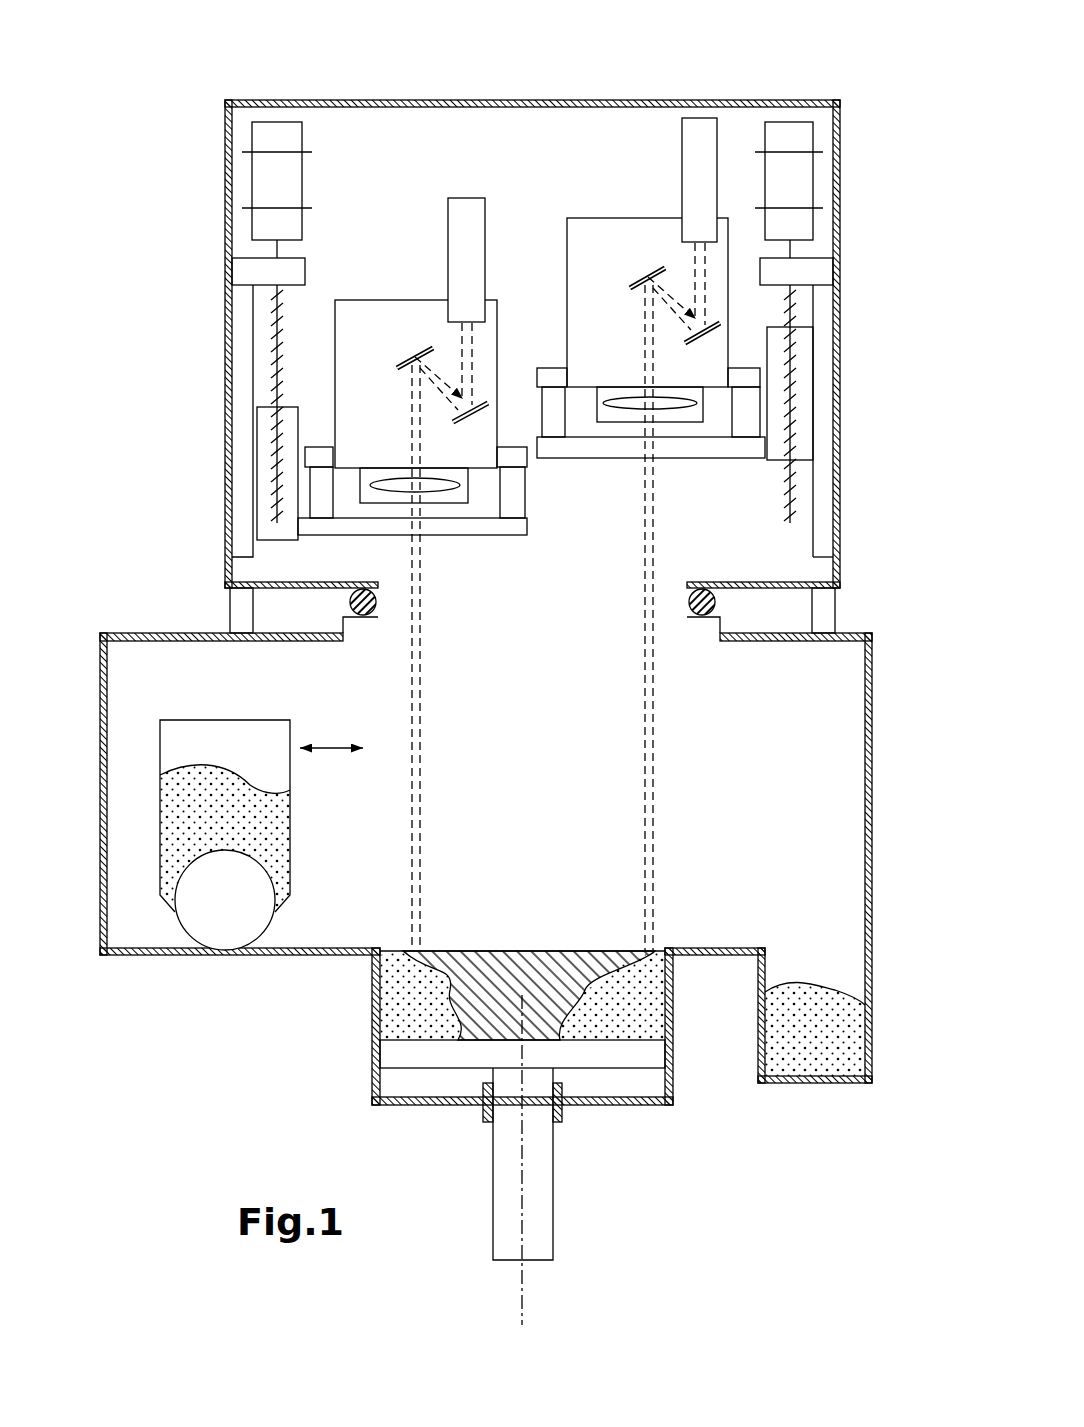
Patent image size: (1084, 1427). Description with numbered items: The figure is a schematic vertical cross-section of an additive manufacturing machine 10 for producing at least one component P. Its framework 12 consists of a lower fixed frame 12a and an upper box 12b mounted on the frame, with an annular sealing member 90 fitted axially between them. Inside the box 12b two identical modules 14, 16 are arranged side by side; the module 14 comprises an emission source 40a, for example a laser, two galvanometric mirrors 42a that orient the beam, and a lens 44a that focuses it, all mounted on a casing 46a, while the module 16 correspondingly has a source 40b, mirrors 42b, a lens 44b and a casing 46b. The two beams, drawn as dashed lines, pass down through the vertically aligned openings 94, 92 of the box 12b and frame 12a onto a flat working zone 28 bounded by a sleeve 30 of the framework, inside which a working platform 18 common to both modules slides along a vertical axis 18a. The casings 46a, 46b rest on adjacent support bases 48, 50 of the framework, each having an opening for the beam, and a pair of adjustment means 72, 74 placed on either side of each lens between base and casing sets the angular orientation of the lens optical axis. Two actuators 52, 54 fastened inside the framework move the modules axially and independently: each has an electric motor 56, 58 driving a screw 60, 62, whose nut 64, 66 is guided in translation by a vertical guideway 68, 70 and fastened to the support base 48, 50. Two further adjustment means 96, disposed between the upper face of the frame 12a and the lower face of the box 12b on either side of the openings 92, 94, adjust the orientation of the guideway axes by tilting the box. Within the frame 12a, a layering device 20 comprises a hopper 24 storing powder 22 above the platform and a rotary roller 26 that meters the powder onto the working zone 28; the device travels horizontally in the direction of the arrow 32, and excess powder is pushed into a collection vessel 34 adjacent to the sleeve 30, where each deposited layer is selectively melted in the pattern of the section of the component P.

The machine 10 is at (331, 62).
The framework 12 is at (863, 164).
The lower fixed frame 12a is at (872, 882).
The upper box 12b is at (842, 228).
The module 14 is at (380, 290).
The module 16 is at (628, 200).
The working platform 18 is at (605, 1074).
The vertical axis 18a is at (522, 1292).
The layering device 20 is at (137, 795).
The powder 22 is at (262, 807).
The hopper 24 is at (160, 760).
The rotary roller 26 is at (192, 917).
The working zone 28 is at (618, 948).
The sleeve 30 is at (373, 1035).
The direction of movement 32 is at (337, 748).
The collection vessel 34 is at (872, 968).
The emission source 40a is at (474, 218).
The emission source 40b is at (697, 130).
The galvanometric mirrors 42a is at (452, 412).
The galvanometric mirrors 42b is at (688, 337).
The lens 44a is at (430, 487).
The lens 44b is at (630, 404).
The casing 46a is at (362, 298).
The casing 46b is at (730, 233).
The support base 48 is at (343, 528).
The support base 50 is at (723, 449).
The actuator 52 is at (251, 248).
The actuator 54 is at (810, 248).
The electric motor 56 is at (262, 170).
The electric motor 58 is at (793, 157).
The screw 60 is at (268, 325).
The screw 62 is at (812, 357).
The nut 64 is at (260, 472).
The nut 66 is at (803, 432).
The guideway 68 is at (238, 383).
The guideway 70 is at (822, 527).
The adjustment means 72 is at (340, 509).
The adjustment means 74 is at (566, 421).
The annular sealing member 90 is at (717, 609).
The opening 92 is at (380, 616).
The opening 94 is at (688, 590).
The adjustment means 96 is at (228, 608).
The component P is at (553, 967).